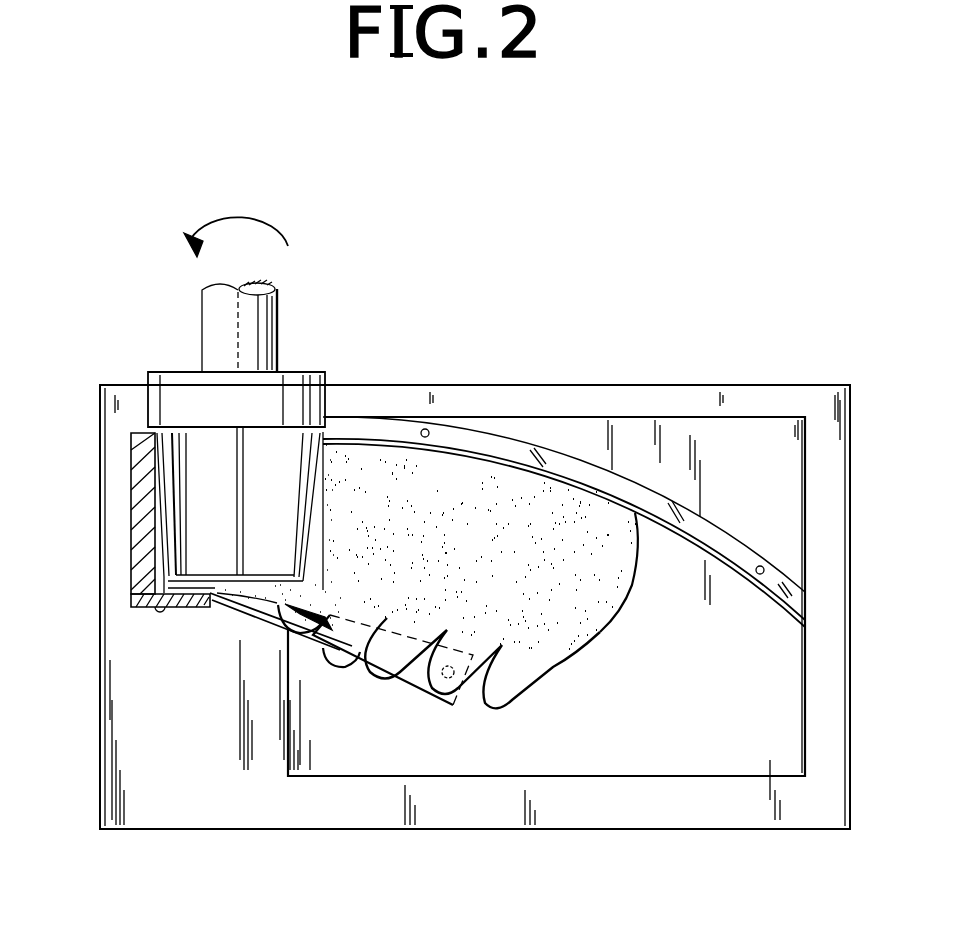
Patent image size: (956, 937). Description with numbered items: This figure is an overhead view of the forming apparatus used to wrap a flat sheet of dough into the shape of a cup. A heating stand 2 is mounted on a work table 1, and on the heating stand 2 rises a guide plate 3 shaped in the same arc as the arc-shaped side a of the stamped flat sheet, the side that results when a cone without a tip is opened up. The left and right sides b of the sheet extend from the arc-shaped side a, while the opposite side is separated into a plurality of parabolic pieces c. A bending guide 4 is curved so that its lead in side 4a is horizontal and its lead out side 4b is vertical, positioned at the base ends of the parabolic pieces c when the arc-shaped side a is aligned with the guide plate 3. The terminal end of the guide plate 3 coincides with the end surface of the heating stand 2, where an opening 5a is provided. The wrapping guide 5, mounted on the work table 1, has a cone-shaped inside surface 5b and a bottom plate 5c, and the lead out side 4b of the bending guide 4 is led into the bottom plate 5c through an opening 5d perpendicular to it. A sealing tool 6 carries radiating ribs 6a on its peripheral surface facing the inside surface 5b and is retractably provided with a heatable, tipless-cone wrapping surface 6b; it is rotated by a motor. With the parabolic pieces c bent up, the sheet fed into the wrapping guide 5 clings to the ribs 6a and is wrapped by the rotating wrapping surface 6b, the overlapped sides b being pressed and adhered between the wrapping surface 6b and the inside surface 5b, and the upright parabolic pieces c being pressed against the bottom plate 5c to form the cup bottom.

The work table 1 is at (777, 397).
The heating stand 2 is at (765, 760).
The guide plate 3 is at (662, 498).
The bending guide 4 is at (367, 668).
The lead in side 4a is at (445, 676).
The lead out side 4b is at (262, 625).
The wrapping guide 5 is at (130, 535).
The opening 5a is at (323, 522).
The inside surface 5b is at (150, 458).
The bottom plate 5c is at (137, 606).
The opening 5d is at (222, 606).
The sealing tool 6 is at (262, 332).
The radiating ribs 6a is at (232, 472).
The wrapping surface 6b is at (290, 470).
The arc-shaped side a is at (545, 470).
The sides b is at (618, 612).
The parabolic pieces c is at (518, 688).